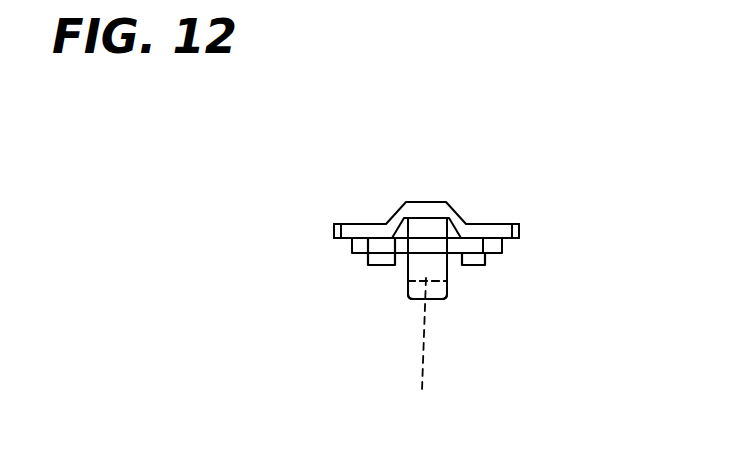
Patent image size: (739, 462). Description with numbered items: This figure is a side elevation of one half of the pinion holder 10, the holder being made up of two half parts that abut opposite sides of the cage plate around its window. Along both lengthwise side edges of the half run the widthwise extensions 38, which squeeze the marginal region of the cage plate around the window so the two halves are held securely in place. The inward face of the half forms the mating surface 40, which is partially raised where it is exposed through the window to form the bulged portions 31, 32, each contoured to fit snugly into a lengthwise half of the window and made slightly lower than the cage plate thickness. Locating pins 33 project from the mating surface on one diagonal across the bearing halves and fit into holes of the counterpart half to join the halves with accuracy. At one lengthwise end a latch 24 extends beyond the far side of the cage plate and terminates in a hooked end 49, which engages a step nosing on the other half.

The pinion holder 10 is at (478, 222).
The widthwise extensions 38 is at (337, 230).
The mating surfaces 40 is at (348, 241).
The locating pins 33 is at (378, 256).
The bulged portion 31 is at (453, 241).
The bulged portion 32 is at (427, 258).
The latch 24 is at (422, 268).
The hooked ends 49 is at (420, 348).